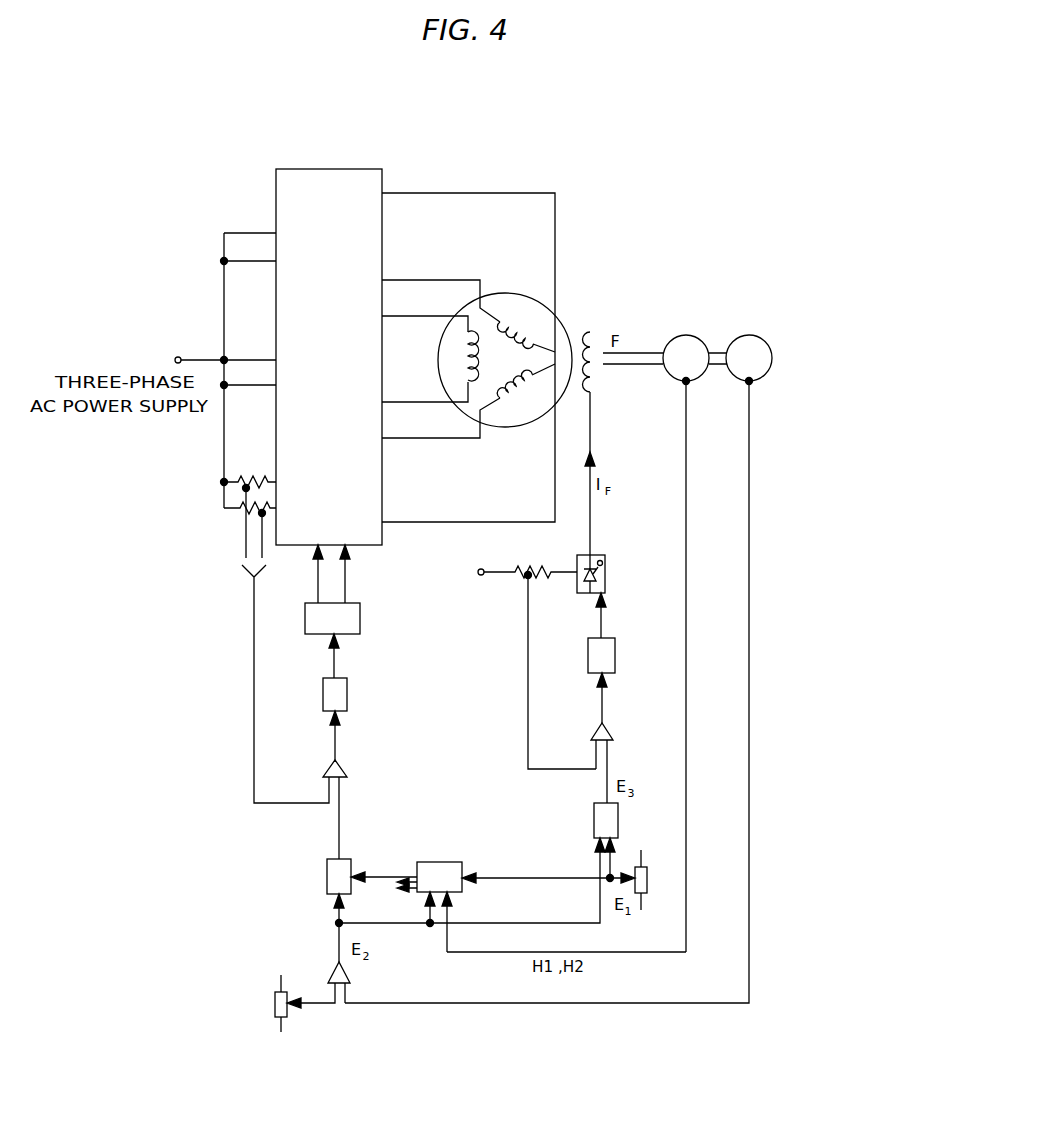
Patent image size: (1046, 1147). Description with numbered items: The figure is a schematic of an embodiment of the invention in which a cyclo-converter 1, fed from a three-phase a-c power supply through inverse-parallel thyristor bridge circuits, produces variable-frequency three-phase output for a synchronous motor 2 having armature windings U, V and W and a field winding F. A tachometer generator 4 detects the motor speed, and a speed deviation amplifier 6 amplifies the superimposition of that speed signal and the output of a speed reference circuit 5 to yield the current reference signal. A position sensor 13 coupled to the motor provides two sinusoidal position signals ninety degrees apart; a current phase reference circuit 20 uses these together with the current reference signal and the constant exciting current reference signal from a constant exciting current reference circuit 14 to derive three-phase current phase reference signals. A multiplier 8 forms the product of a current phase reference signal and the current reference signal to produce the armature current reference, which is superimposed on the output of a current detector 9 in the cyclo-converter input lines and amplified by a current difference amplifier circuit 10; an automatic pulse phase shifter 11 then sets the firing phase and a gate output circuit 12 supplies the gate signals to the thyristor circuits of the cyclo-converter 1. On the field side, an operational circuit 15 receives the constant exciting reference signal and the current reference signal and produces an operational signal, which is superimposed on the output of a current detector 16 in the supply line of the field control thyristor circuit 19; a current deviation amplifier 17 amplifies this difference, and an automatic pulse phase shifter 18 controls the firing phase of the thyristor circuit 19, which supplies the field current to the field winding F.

The cyclo-converter 1 is at (383, 176).
The synchronous motor 2 is at (558, 313).
The tachometer generator 4 is at (750, 334).
The speed reference circuit 5 is at (275, 1005).
The speed deviation amplifier 6 is at (352, 972).
The multiplier 8 is at (327, 885).
The current detector 9 is at (252, 505).
The current difference amplifier circuit 10 is at (346, 772).
The automatic pulse phase shifter 11 is at (347, 695).
The gate output circuit 12 is at (360, 618).
The position sensor 13 is at (694, 334).
The constant exciting current reference circuit 14 is at (647, 880).
The operational circuit 15 is at (618, 822).
The current detector 16 is at (521, 578).
The current deviation amplifier 17 is at (613, 730).
The automatic pulse phase shifter 18 is at (615, 655).
The thyristor circuit 19 is at (608, 576).
The current phase reference circuit 20 is at (462, 865).